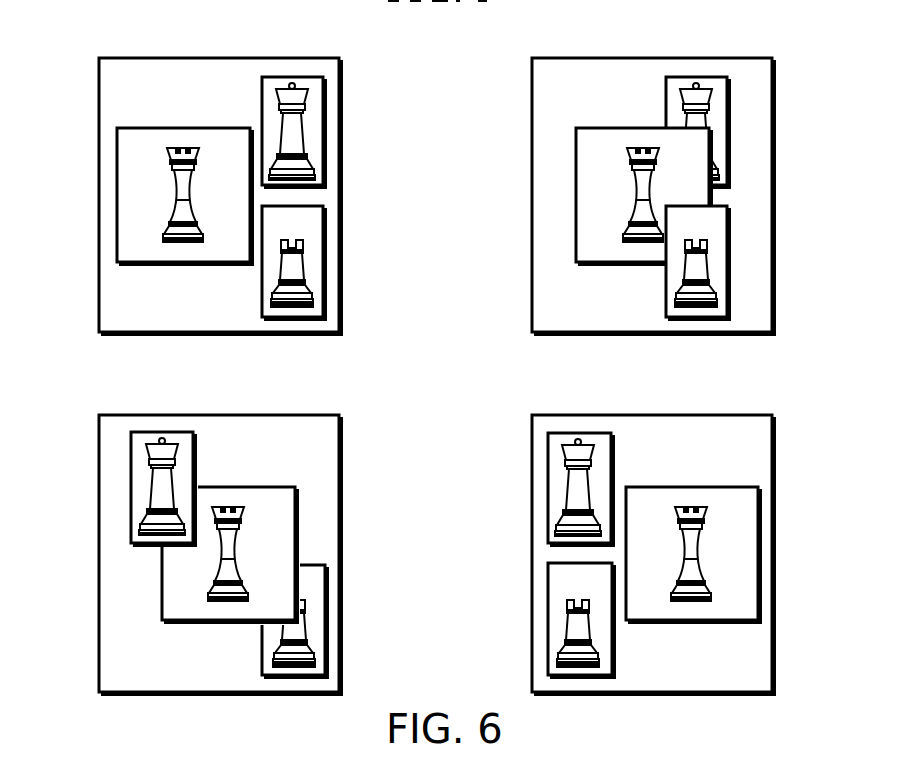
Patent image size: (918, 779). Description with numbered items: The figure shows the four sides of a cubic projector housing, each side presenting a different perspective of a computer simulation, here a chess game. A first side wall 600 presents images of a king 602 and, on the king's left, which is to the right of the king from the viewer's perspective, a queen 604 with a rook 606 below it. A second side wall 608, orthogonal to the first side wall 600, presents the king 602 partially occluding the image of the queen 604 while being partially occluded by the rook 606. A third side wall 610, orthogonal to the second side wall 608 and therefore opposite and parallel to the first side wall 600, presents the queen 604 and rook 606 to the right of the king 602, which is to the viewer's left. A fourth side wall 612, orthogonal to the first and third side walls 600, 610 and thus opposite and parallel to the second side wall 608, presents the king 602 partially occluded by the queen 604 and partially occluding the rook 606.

The first side wall 600 is at (218, 57).
The king 602 is at (117, 190).
The queen 604 is at (323, 124).
The rook 606 is at (323, 272).
The second side wall 608 is at (651, 57).
The third side wall 610 is at (651, 415).
The fourth side wall 612 is at (218, 415).